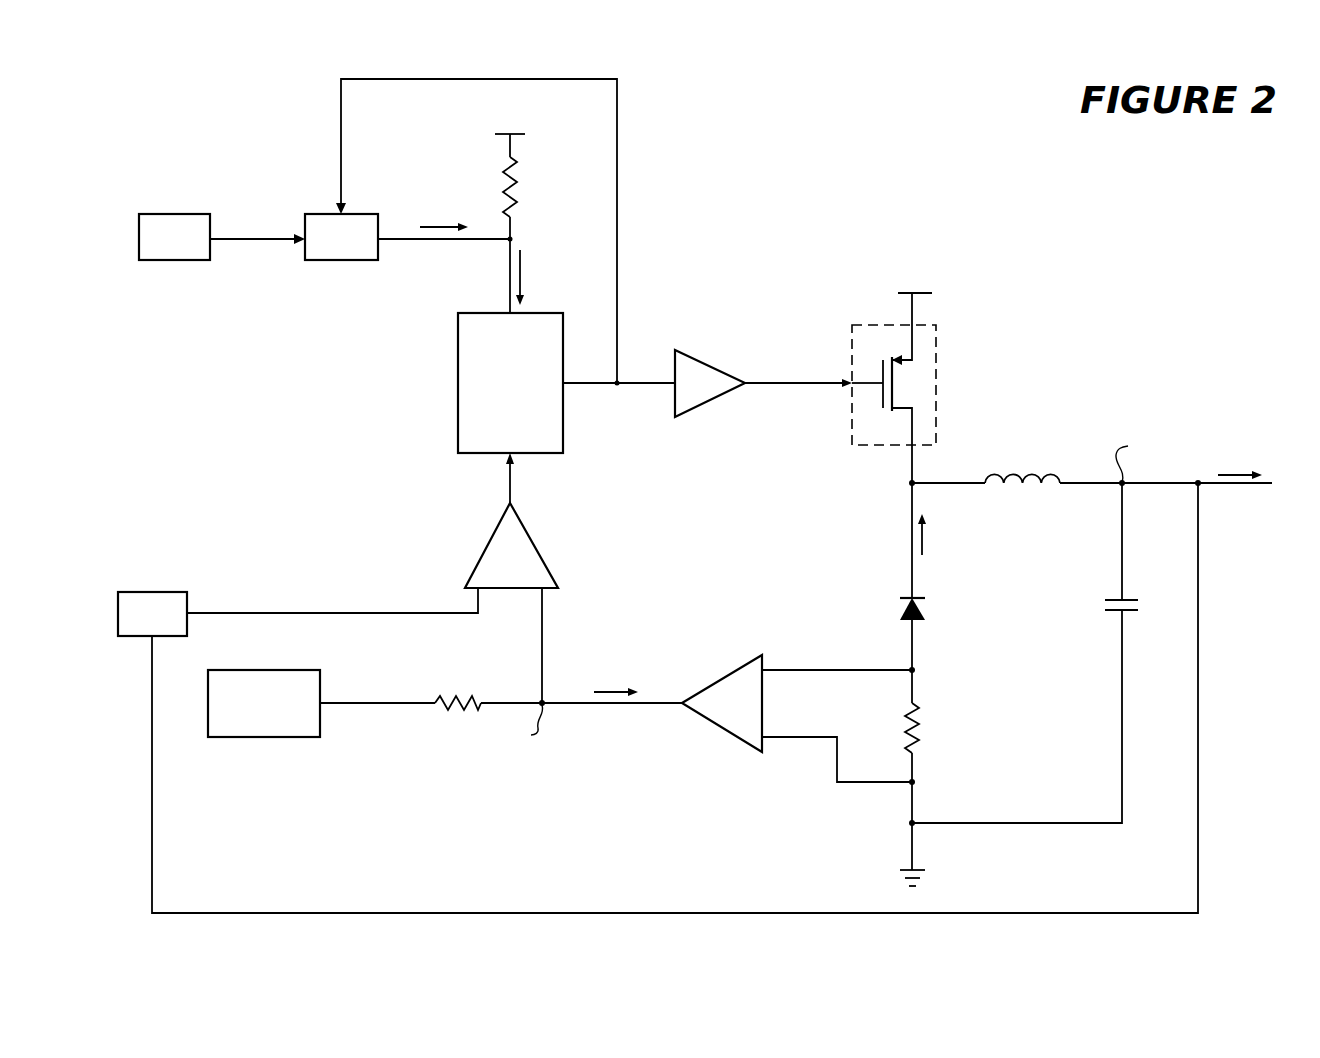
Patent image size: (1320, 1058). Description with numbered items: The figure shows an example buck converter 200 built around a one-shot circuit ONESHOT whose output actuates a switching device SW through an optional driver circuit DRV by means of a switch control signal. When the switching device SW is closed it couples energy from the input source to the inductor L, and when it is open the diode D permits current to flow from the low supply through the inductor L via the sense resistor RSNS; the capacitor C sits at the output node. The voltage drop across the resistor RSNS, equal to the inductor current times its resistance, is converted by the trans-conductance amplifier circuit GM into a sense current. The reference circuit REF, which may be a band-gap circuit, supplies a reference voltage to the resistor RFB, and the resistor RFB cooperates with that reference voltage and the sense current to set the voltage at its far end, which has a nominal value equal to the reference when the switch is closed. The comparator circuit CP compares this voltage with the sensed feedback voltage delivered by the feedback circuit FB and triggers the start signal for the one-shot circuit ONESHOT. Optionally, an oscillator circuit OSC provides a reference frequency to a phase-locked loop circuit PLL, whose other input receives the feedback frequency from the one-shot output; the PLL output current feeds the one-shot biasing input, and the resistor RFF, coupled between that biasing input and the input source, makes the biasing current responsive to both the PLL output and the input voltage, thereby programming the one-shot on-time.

The switching regulator circuit 200 is at (1112, 247).
The oscillator circuit OSC is at (174, 237).
The phase-locked loop circuit PLL is at (341, 237).
The resistor R_FF RFF is at (532, 187).
The one-shot circuit ONESHOT is at (510, 383).
The driver circuit DRV is at (710, 383).
The switching device SW is at (910, 388).
The inductor L is at (1022, 463).
The diode D is at (927, 608).
The resistor R_SNS RSNS is at (941, 728).
The capacitor C is at (1107, 608).
The feedback circuit FB is at (152, 614).
The comparator circuit CP is at (511, 546).
The reference circuit REF is at (264, 703).
The resistor R_FB RFB is at (455, 685).
The trans-conductance amplifier circuit GM is at (722, 703).